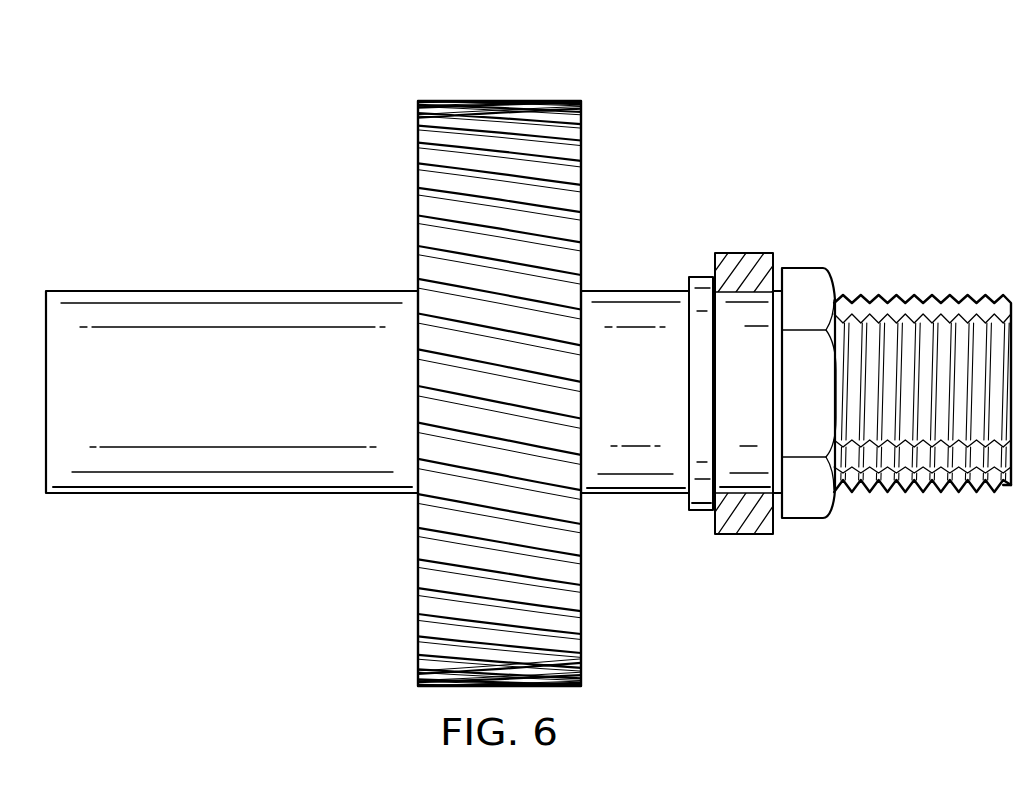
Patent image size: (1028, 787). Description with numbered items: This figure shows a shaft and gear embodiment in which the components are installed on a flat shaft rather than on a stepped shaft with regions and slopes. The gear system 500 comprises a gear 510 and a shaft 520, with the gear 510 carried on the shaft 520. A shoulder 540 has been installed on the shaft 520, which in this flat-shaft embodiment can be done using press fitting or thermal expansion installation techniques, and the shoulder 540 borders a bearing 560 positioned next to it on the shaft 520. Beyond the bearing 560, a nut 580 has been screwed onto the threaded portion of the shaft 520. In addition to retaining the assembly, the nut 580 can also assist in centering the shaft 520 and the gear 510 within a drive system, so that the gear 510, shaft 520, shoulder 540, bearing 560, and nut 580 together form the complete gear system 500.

The gear system 500 is at (254, 66).
The gear 510 is at (498, 100).
The shaft 520 is at (232, 291).
The shoulder 540 is at (703, 277).
The bearing 560 is at (745, 253).
The nut 580 is at (803, 268).